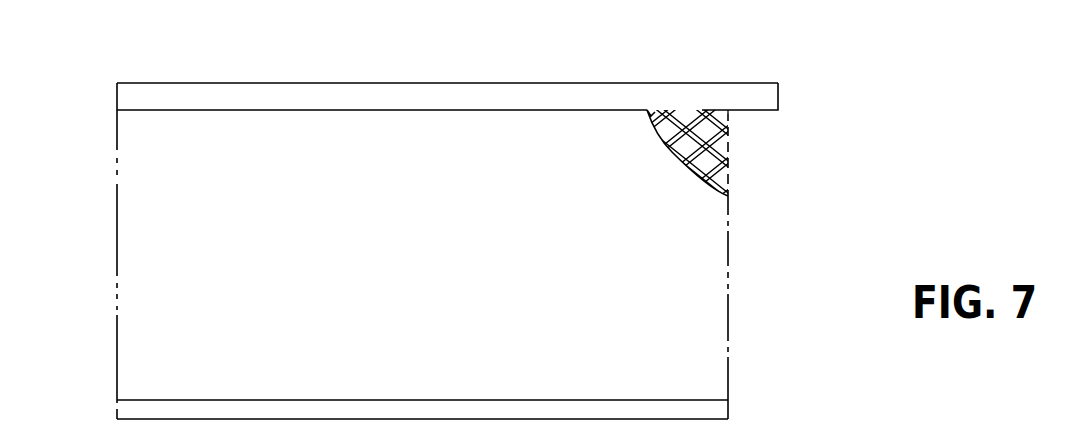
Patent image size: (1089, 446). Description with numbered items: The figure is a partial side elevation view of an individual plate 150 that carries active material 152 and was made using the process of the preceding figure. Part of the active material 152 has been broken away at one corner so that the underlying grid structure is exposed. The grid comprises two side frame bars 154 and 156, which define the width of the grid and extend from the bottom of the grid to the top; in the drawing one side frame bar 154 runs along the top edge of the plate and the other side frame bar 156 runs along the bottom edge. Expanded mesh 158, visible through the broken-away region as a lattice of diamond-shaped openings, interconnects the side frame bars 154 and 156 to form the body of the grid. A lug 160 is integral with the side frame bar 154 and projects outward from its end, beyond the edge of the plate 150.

The plate 150 is at (452, 210).
The active material 152 is at (402, 267).
The side frame bar 154 is at (480, 90).
The side frame bar 156 is at (722, 407).
The expanded mesh 158 is at (707, 148).
The lug 160 is at (758, 94).